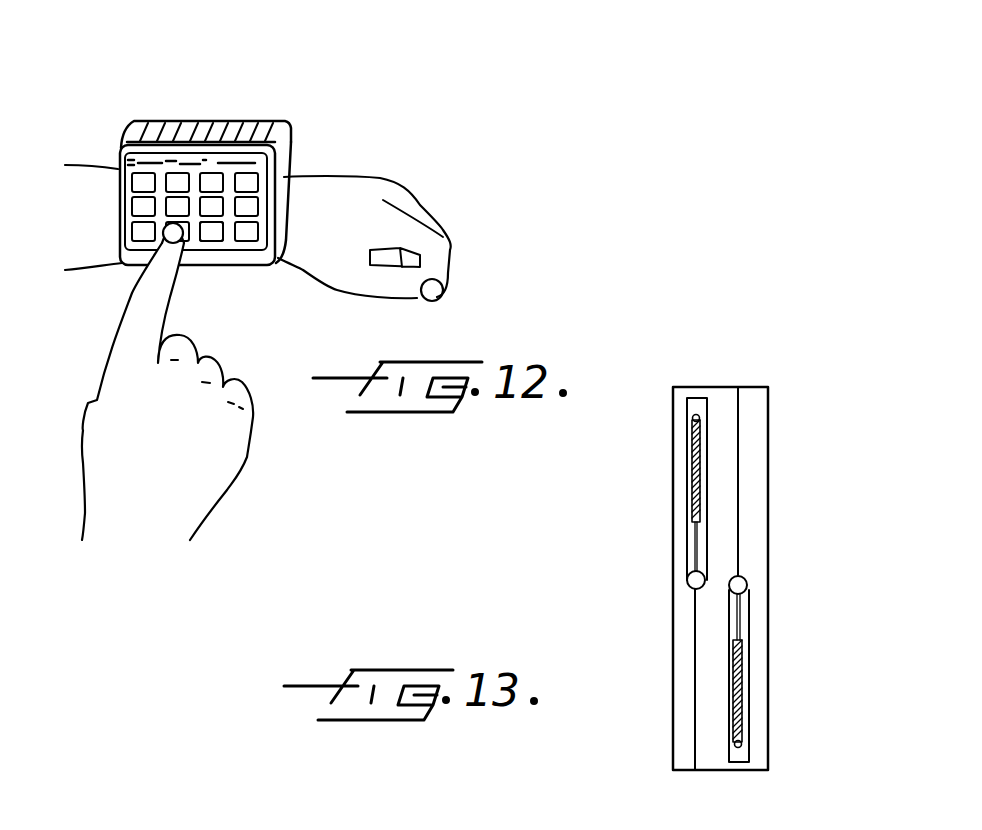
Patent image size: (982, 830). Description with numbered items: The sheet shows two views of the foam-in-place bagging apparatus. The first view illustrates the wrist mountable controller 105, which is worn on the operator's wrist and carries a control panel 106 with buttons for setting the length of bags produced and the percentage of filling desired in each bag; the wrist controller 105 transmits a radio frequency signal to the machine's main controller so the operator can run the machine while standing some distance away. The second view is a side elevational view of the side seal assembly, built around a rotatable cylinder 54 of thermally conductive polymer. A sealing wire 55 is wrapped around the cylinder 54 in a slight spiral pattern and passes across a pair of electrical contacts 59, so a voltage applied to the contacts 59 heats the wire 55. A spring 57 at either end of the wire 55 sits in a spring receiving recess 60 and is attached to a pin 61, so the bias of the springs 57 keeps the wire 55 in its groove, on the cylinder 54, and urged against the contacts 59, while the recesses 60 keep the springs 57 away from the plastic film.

In FIG. 12, the wrist mountable controller 105 is at (178, 110).
In FIG. 12, the control panel 106 is at (229, 243).
In FIG. 13, the rotatable cylinder 54 is at (758, 422).
In FIG. 13, the sealing wire 55 is at (740, 490).
In FIG. 13, the spring 57 is at (696, 477).
In FIG. 13, the electrical contacts 59 is at (687, 579).
In FIG. 13, the spring receiving recess 60 is at (697, 398).
In FIG. 13, the pin 61 is at (693, 421).